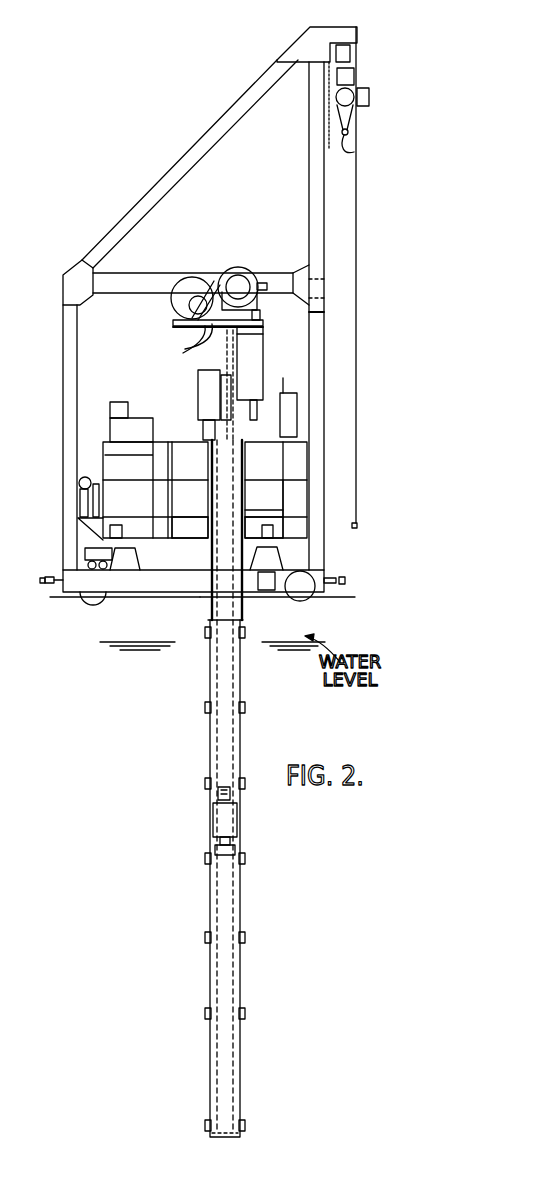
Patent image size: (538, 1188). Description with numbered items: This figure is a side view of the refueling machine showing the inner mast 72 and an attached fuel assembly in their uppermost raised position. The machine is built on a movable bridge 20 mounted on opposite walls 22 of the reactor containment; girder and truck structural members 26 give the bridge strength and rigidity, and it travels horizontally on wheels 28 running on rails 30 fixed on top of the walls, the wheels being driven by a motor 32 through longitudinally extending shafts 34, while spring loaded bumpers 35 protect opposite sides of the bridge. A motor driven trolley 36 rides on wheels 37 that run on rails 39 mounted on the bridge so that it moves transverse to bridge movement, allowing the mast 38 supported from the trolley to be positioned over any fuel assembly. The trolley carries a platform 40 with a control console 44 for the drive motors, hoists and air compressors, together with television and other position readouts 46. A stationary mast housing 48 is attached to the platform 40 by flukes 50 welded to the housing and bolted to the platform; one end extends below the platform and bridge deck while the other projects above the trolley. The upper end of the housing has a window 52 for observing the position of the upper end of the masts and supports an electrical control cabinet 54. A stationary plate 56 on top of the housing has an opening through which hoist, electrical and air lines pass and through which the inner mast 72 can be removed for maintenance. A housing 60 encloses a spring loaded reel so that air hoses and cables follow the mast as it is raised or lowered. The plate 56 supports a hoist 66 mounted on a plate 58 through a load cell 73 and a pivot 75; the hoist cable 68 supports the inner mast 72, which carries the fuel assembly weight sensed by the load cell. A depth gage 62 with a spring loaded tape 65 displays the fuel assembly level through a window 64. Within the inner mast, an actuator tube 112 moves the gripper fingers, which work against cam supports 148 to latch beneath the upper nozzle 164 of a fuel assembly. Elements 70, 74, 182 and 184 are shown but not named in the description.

The movable bridge 20 is at (328, 558).
The walls 22 is at (355, 597).
The girder and truck structural members 26 is at (136, 562).
The wheels 28 is at (93, 602).
The rails 30 is at (55, 597).
The motor 32 is at (104, 536).
The shafts 34 is at (85, 565).
The spring loaded bumpers 35 is at (45, 583).
The trolley 36 is at (297, 461).
The wheels 37 is at (275, 530).
The mast 38 is at (248, 912).
The rails 39 is at (281, 565).
The platform 40 is at (273, 510).
The control console 44 is at (132, 416).
The position readouts 46 is at (112, 402).
The mast housing 48 is at (249, 471).
The flukes 50 is at (205, 507).
The window 52 is at (198, 398).
The electrical control cabinet 54 is at (263, 365).
The stationary plate 56 is at (259, 331).
The plate 58 is at (266, 285).
The housing 60 is at (186, 280).
The depth gage 62 is at (199, 297).
The window 64 is at (180, 324).
The tape 65 is at (190, 332).
The hoist 66 is at (228, 270).
The hoist cable 68 is at (196, 368).
The sheave hub 70 is at (241, 282).
The inner mast 72 is at (233, 731).
The load cell 73 is at (205, 348).
The upper casing 74 is at (243, 678).
The pivot 75 is at (259, 318).
The actuator tube 112 is at (220, 791).
The cam supports 148 is at (220, 827).
The upper nozzle 164 is at (235, 848).
The hoist 182 is at (358, 98).
The hook 184 is at (354, 152).